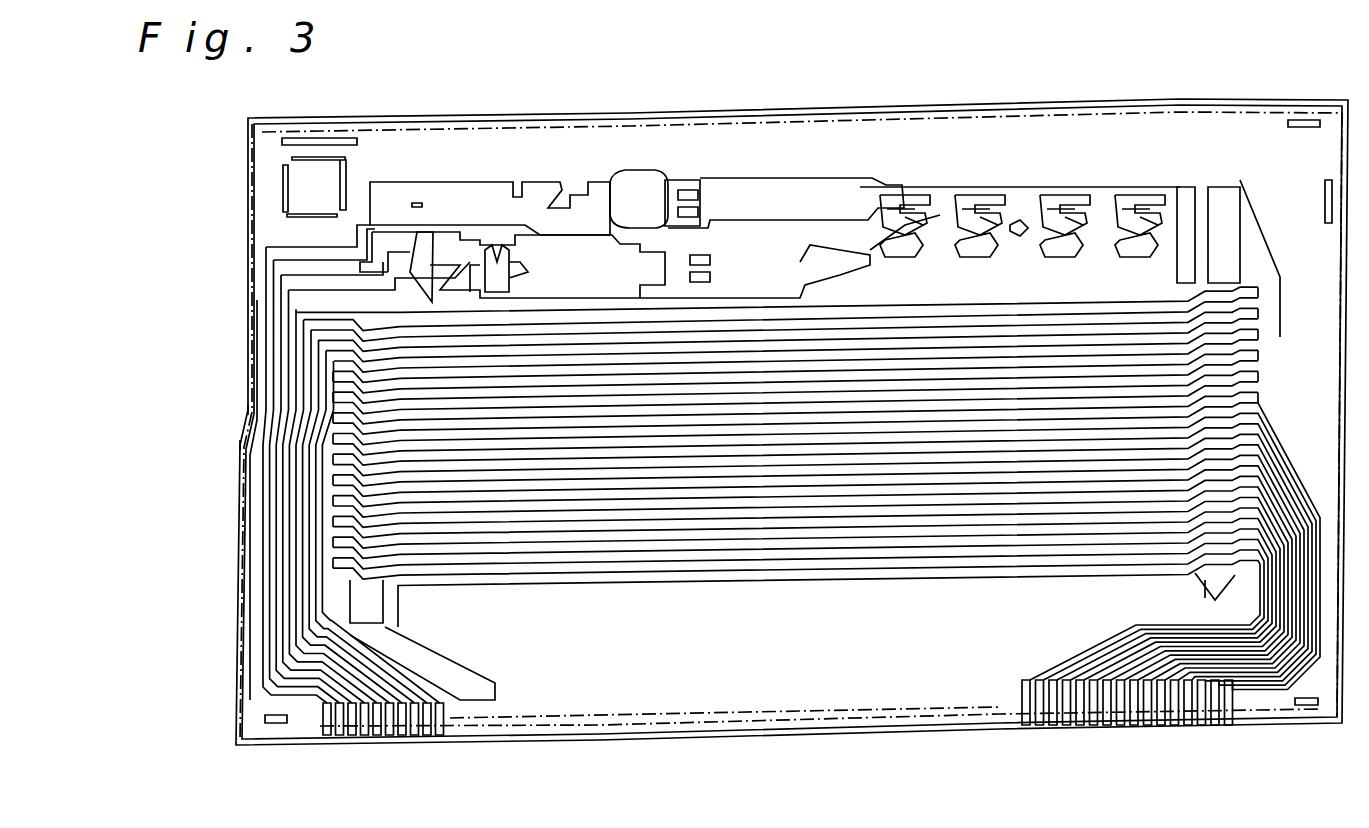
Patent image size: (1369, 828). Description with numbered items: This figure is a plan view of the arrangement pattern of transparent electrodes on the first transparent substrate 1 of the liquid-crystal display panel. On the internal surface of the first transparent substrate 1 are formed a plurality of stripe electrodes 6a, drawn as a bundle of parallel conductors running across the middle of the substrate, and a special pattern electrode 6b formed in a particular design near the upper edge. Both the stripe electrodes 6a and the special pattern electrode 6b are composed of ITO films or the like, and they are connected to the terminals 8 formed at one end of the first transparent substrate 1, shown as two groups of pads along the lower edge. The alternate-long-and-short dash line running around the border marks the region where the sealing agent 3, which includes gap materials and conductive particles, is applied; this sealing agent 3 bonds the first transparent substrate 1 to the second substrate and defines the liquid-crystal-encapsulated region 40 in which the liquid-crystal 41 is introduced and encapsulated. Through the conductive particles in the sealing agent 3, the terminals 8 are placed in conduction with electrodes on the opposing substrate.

The first transparent substrate 1 is at (737, 107).
The sealing agent 3 is at (248, 378).
The stripe electrodes 6a is at (791, 475).
The special pattern electrode 6b is at (1070, 200).
The terminal 8 is at (1232, 743).
The liquid-crystal-encapsulated region 40 is at (637, 149).
The liquid-crystal 41 is at (568, 263).